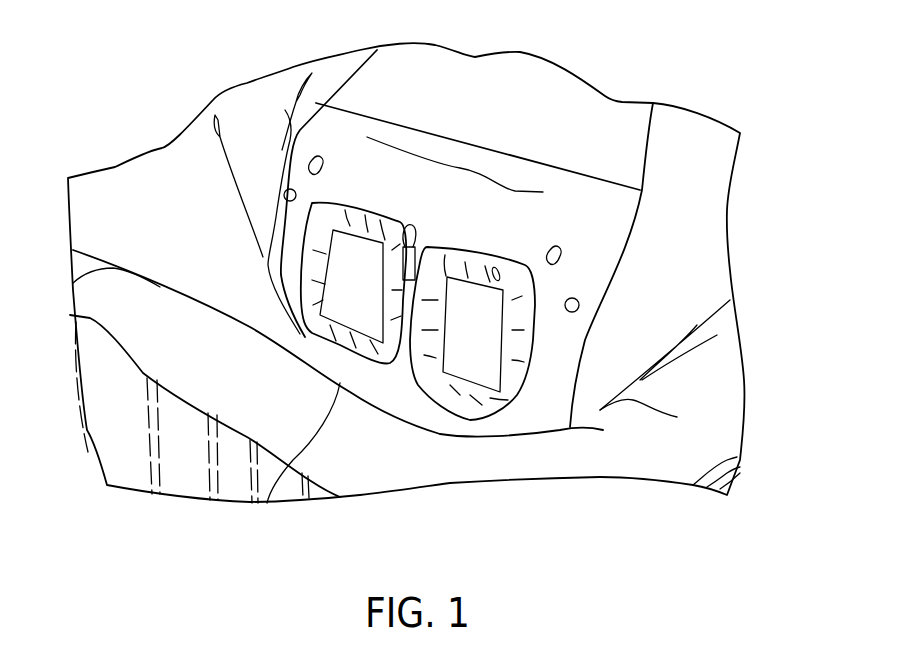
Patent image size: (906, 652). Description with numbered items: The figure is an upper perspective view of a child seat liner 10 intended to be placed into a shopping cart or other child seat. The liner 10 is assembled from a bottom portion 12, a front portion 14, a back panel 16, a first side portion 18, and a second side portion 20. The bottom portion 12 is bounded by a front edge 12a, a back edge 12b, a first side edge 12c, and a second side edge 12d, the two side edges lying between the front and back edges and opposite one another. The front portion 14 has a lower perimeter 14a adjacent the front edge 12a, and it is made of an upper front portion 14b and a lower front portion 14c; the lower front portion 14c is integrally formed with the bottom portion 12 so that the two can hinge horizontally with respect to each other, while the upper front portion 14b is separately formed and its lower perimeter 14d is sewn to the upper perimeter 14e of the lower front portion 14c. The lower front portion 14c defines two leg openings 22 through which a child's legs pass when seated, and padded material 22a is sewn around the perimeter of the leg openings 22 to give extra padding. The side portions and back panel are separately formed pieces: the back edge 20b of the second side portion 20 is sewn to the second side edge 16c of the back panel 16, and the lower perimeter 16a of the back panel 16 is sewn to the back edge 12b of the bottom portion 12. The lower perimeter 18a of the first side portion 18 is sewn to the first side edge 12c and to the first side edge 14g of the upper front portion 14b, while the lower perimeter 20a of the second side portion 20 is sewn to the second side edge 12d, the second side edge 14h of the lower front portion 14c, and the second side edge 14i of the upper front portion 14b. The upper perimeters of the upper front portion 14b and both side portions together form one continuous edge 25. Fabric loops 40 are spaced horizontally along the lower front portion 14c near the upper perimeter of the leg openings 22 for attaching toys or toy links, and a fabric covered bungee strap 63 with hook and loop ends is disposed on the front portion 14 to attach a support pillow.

The child seat liner 10 is at (730, 72).
The bottom portion 12 is at (442, 424).
The front edge 12a is at (523, 430).
The back edge 12b is at (382, 410).
The first side edge 12c is at (580, 425).
The second side edge 12d is at (260, 312).
The front portion 14 is at (597, 246).
The lower perimeter of the front portion 14a is at (273, 317).
The upper front portion 14b is at (559, 132).
The lower front portion 14c is at (510, 229).
The lower perimeter of the upper front portion 14d is at (455, 138).
The upper perimeter of the lower front portion 14e is at (540, 165).
The first side edge of the upper front portion 14g is at (642, 173).
The second side edge of the lower front portion 14h is at (291, 143).
The second side edge of the upper front portion 14i is at (360, 70).
The back panel 16 is at (338, 480).
The lower perimeter of the back panel 16a is at (267, 503).
The second side edge of the back panel 16c is at (160, 290).
The first side portion 18 is at (723, 423).
The lower perimeter of the first side portion 18a is at (652, 161).
The second side portion 20 is at (120, 183).
The lower perimeter of the second side portion 20a is at (220, 333).
The back edge of the second side portion 20b is at (152, 276).
The leg openings 22 is at (357, 250).
The padded material 22a is at (522, 322).
The continuous edge 25 is at (675, 103).
The fabric loops 40 is at (323, 163).
The second fabric covered bungee strap 63 is at (417, 230).